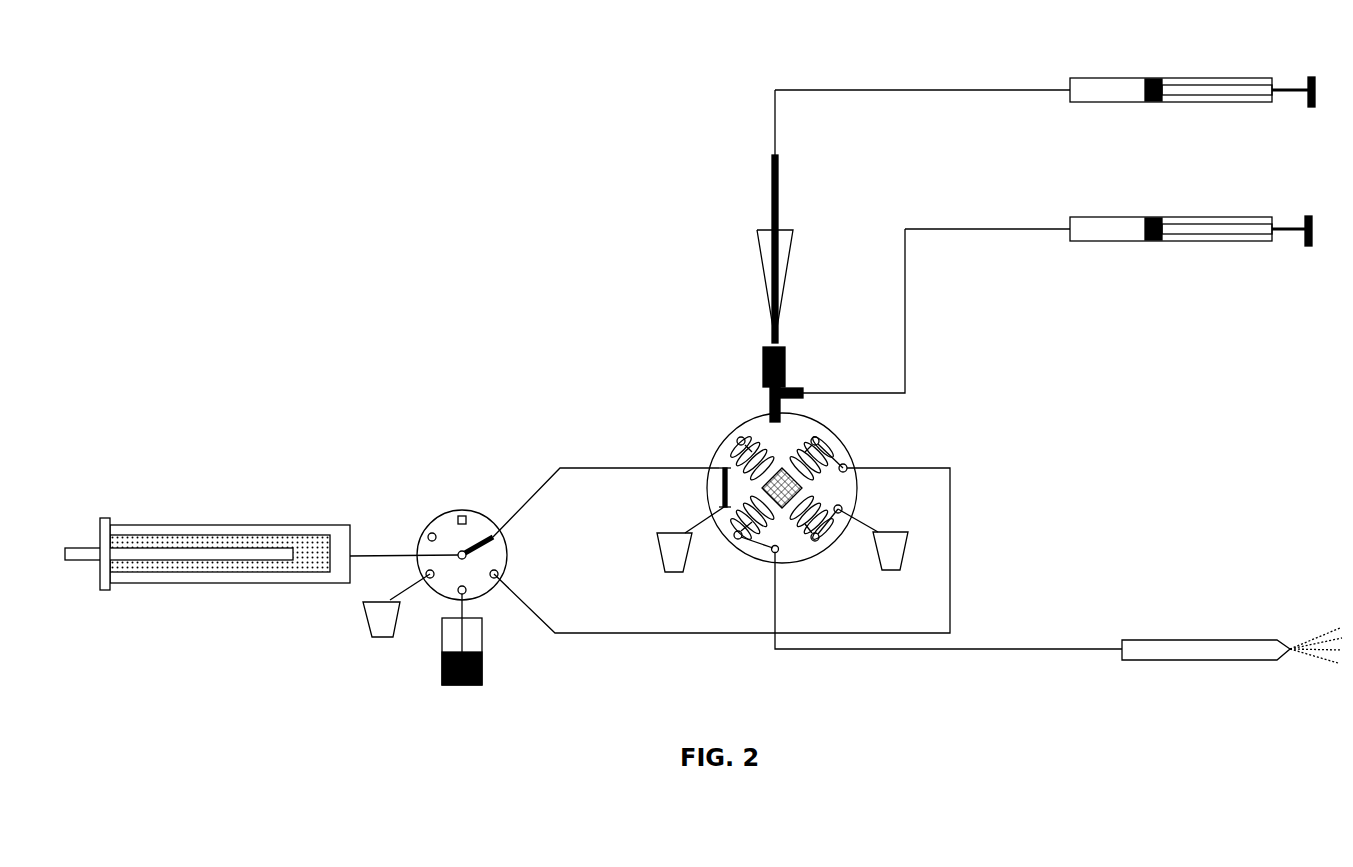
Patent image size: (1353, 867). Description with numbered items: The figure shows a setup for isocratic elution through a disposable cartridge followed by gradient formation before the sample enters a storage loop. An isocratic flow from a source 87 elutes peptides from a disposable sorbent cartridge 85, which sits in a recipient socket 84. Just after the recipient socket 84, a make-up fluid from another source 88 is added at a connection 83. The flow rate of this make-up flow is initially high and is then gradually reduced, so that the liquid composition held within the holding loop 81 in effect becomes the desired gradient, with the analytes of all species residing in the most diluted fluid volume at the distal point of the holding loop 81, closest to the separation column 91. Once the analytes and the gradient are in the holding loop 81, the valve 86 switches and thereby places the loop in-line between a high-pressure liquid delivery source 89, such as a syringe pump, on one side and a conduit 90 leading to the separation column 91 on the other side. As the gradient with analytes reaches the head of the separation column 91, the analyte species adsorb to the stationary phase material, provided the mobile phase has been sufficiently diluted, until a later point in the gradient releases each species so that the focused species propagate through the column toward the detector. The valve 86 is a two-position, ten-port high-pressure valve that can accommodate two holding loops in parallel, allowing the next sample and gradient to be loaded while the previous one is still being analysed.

The holding loop 81 is at (732, 456).
The connection 83 is at (842, 313).
The recipient socket 84 is at (793, 381).
The disposable sorbent cartridge 85 is at (790, 216).
The valve 86 is at (774, 465).
The source 87 is at (1045, 81).
The source 88 is at (1108, 221).
The high-pressure liquid delivery source 89 is at (261, 544).
The conduit 90 is at (948, 601).
The separation column 91 is at (1232, 638).